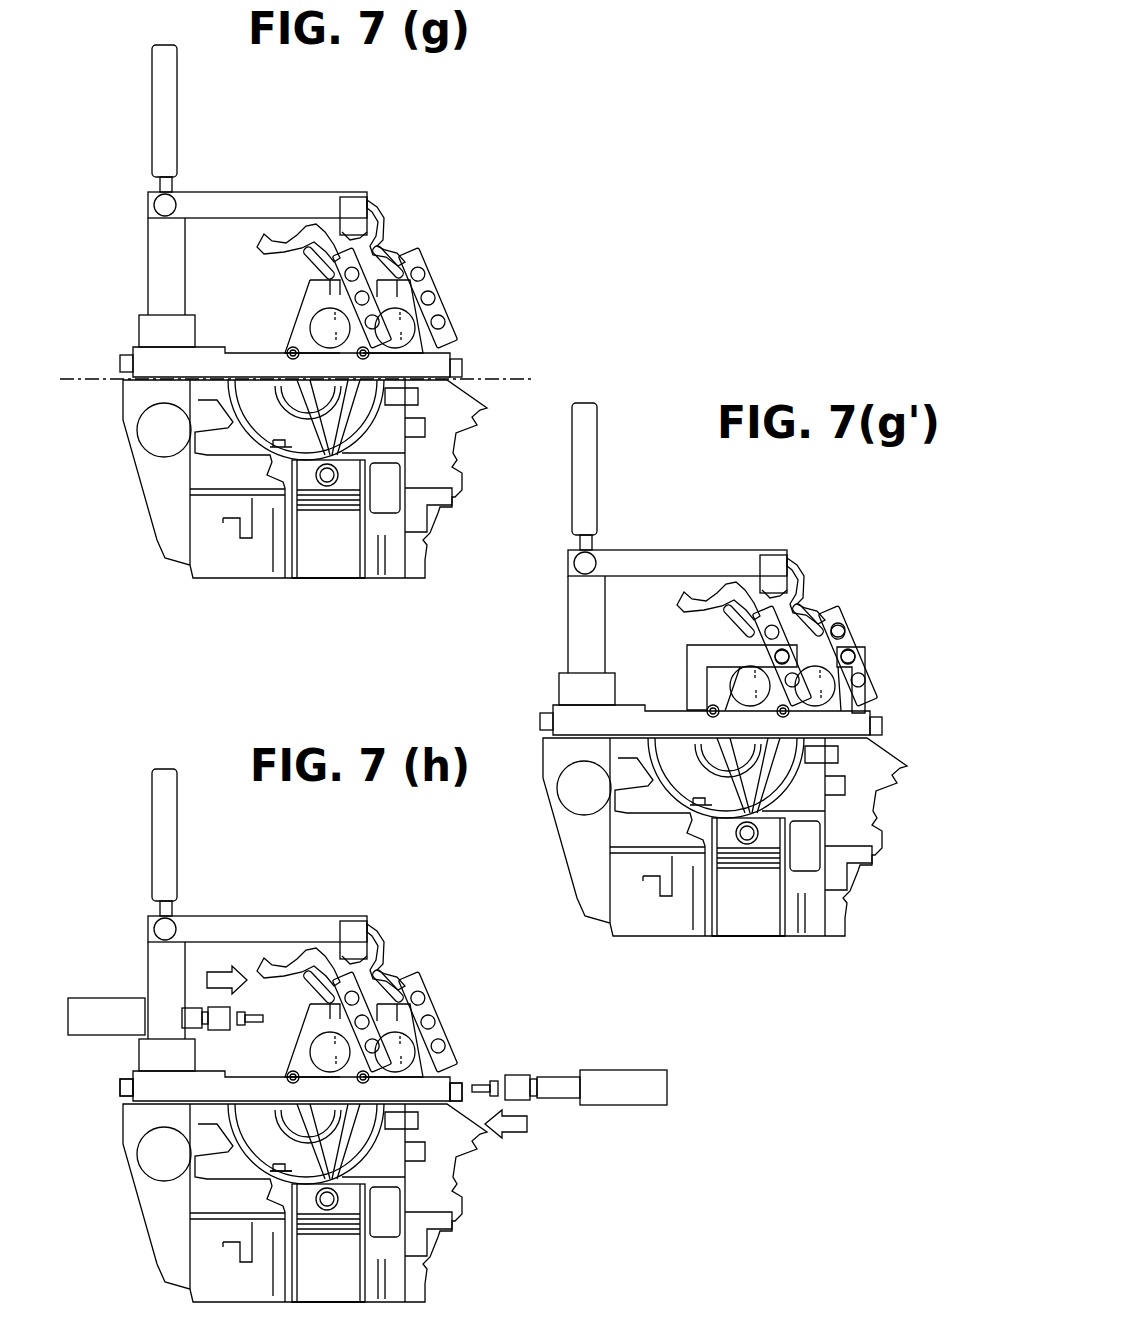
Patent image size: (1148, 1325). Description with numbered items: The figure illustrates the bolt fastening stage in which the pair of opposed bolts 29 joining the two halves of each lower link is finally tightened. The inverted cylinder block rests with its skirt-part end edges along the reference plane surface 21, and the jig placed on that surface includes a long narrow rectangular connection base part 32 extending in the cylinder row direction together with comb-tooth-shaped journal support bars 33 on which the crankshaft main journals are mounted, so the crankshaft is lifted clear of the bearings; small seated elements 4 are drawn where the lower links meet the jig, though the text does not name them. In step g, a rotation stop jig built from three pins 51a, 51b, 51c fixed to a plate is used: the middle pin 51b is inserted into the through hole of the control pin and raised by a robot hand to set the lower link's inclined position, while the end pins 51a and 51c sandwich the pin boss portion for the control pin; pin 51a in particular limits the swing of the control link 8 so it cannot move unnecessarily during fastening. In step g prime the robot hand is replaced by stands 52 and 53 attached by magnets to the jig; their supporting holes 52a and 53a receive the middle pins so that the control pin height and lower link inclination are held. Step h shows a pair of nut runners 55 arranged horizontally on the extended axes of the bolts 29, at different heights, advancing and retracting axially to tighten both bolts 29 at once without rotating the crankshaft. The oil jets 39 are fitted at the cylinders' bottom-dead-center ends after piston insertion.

The valve stem seal 4 is at (289, 352).
The control link 8 is at (365, 195).
The reference plane surface 21 is at (520, 378).
The bolt 29 is at (256, 1025).
The connection base part 32 is at (100, 1099).
The journal support bar 33 is at (442, 1102).
The oil jet 39 is at (297, 1172).
The pin 51a is at (444, 326).
The pin 51b is at (434, 300).
The pin 51c is at (422, 270).
The stand 52 is at (690, 658).
The supporting hole 52a is at (775, 657).
The stand 53 is at (862, 672).
The supporting hole 53a is at (841, 626).
The nut runner 55 is at (107, 1000).